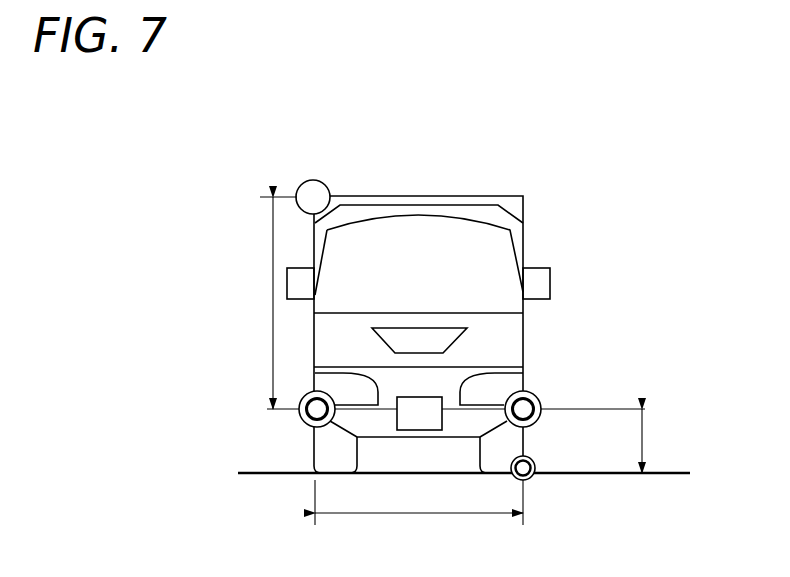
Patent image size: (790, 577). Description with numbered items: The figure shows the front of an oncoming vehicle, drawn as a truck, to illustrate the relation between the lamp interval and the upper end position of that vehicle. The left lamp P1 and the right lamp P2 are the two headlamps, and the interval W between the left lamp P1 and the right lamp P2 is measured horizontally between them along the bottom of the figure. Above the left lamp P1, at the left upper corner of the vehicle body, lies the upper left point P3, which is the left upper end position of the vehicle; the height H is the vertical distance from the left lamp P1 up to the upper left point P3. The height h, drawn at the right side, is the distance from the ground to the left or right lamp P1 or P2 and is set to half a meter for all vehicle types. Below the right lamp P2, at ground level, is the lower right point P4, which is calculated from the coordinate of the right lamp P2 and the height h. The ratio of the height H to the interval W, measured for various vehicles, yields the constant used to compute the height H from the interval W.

The left lamp P1 is at (303, 421).
The right lamp P2 is at (523, 403).
The upper left point P3 is at (307, 183).
The lower right point P4 is at (526, 477).
The height H is at (274, 303).
The interval W is at (419, 514).
The height of the headlamp h is at (654, 441).